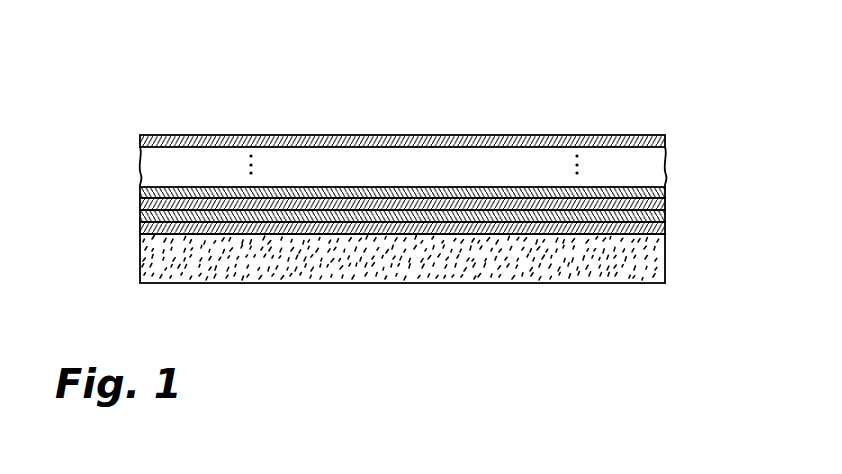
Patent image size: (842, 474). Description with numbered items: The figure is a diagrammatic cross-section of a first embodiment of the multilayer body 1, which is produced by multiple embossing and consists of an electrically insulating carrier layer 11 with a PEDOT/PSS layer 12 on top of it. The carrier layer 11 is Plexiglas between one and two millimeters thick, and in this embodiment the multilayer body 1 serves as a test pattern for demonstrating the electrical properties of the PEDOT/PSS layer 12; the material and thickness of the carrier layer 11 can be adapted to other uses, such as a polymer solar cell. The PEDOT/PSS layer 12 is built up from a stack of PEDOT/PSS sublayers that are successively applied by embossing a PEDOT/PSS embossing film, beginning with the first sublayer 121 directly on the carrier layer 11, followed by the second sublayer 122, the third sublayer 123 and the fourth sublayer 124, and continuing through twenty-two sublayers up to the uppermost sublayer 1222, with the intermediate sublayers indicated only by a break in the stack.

The multilayer body 1 is at (648, 101).
The carrier layer 11 is at (665, 277).
The PEDOT/PSS layer 12 is at (130, 135).
The PEDOT/PSS sublayer 121 is at (665, 229).
The PEDOT/PSS sublayer 122 is at (665, 214).
The PEDOT/PSS sublayer 123 is at (665, 203).
The PEDOT/PSS sublayer 124 is at (665, 190).
The PEDOT/PSS sublayer 1222 is at (665, 140).